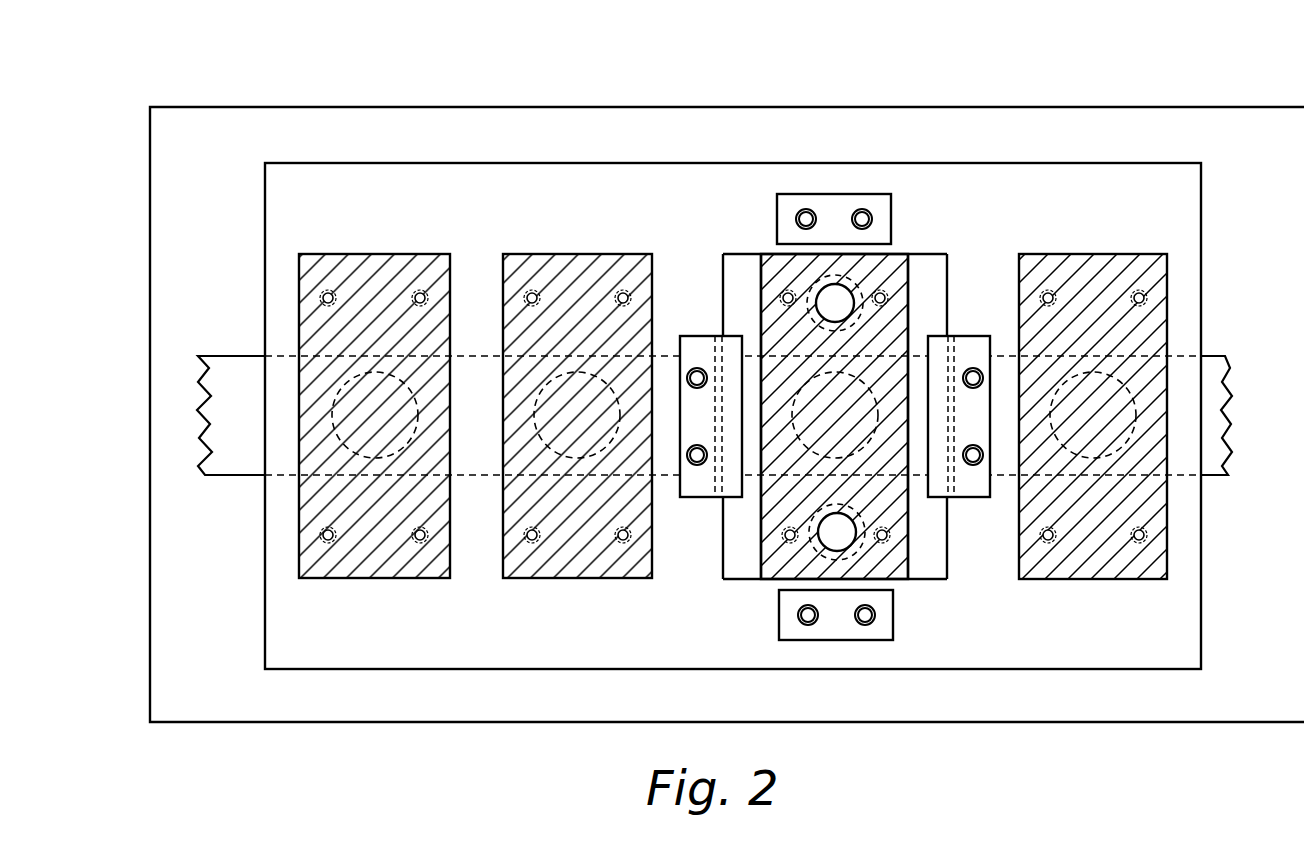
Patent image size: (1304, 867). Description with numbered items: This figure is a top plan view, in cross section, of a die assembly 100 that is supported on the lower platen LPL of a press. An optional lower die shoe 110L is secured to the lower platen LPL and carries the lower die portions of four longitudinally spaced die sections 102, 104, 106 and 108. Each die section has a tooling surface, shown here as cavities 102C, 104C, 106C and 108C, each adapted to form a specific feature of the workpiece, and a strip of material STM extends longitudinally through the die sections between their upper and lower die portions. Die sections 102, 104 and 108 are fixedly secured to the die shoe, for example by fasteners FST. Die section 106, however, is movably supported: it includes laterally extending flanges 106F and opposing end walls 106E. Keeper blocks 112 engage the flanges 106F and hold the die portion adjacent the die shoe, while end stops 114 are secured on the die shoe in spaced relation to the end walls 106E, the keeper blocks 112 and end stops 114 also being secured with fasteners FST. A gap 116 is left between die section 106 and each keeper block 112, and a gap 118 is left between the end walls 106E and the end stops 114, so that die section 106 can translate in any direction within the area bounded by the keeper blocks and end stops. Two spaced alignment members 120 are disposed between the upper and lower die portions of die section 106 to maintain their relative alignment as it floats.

The die assembly 100 is at (828, 82).
The die section 102 is at (362, 244).
The cavity 102C is at (354, 457).
The die section 104 is at (567, 246).
The cavity 104C is at (558, 457).
The die section 106 is at (912, 220).
The cavity 106C is at (878, 397).
The end wall 106E is at (770, 252).
The flange 106F is at (928, 260).
The die section 108 is at (1111, 217).
The cavity 108C is at (1123, 455).
The lower die shoe 110L is at (442, 192).
The keeper block 112 is at (703, 497).
The end stop 114 is at (845, 194).
The gap 116 is at (716, 352).
The gap 118 is at (868, 250).
The alignment member 120 is at (808, 313).
The fastener FST is at (527, 295).
The strip of material STM is at (232, 356).
The lower platen LPL is at (237, 684).